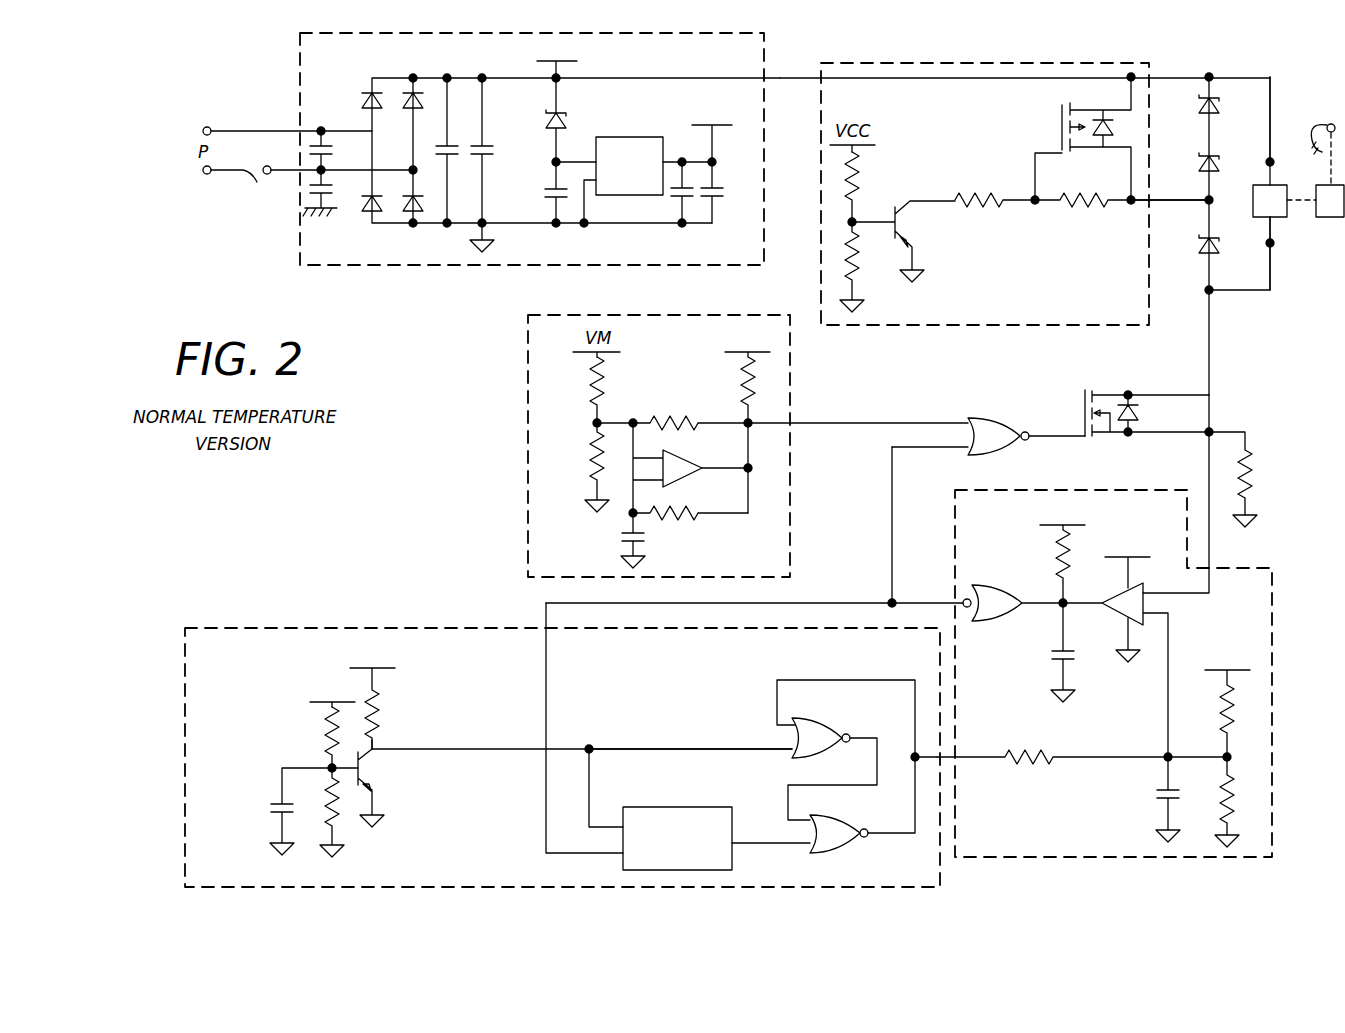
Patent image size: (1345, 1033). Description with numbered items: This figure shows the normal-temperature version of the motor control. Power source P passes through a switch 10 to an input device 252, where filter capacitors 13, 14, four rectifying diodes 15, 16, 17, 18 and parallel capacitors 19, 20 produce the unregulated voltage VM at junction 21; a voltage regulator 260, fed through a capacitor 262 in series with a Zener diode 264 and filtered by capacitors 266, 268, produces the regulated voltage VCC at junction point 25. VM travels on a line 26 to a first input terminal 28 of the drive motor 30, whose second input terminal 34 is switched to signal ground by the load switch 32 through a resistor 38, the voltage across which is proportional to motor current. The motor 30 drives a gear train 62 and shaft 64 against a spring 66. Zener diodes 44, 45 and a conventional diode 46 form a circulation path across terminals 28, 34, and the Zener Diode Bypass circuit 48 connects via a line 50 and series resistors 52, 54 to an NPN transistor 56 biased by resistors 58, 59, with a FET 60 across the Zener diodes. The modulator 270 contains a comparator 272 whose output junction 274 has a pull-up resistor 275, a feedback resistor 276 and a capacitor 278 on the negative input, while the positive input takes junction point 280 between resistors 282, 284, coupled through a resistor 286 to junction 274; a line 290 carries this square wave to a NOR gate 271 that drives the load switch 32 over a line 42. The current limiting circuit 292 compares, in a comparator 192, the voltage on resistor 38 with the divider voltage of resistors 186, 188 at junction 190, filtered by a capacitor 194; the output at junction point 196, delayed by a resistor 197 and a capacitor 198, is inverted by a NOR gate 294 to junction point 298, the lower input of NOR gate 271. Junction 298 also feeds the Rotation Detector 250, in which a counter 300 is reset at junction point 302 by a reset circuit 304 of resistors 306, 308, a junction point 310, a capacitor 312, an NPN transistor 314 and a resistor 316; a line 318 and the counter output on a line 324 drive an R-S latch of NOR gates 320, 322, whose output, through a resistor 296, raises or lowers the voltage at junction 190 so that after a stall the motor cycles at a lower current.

The switch 10 is at (253, 190).
The filter capacitor 13 is at (315, 148).
The filter capacitor 14 is at (306, 200).
The diode 15 is at (366, 90).
The diode 16 is at (412, 108).
The diode 17 is at (370, 196).
The diode 18 is at (413, 196).
The capacitor 19 is at (449, 145).
The capacitor 20 is at (480, 158).
The VM supply node 21 is at (560, 76).
The junction point 25 is at (714, 160).
The line 26 is at (777, 76).
The first input terminal 28 is at (1265, 162).
The drive motor 30 is at (1253, 190).
The load switch 32 is at (1107, 390).
The second input terminal 34 is at (1266, 243).
The resistor 38 is at (1252, 478).
The line 42 is at (1065, 434).
The Zener diode 44 is at (1204, 99).
The Zener diode 45 is at (1204, 158).
The conventional diode 46 is at (1203, 240).
The Zener Diode Bypass circuit 48 is at (1112, 63).
The line 50 is at (1190, 198).
The resistor 52 is at (1092, 208).
The resistor 54 is at (980, 208).
The NPN transistor 56 is at (912, 222).
The resistor 58 is at (860, 185).
The resistor 59 is at (860, 255).
The FET 60 is at (1058, 125).
The gear train 62 is at (1338, 218).
The shaft 64 is at (1321, 154).
The spring 66 is at (1331, 122).
The resistor 186 is at (1222, 712).
The resistor 188 is at (1222, 792).
The junction point 190 is at (1166, 752).
The comparator 192 is at (1118, 600).
The capacitor 194 is at (1162, 802).
The junction point 196 is at (1060, 606).
The resistor 197 is at (1058, 578).
The capacitor 198 is at (1068, 660).
The Rotation Detector circuit 250 is at (455, 628).
The input device 252 is at (605, 33).
The voltage regulator box 260 is at (607, 137).
The capacitor 262 is at (553, 190).
The Zener diode 264 is at (553, 115).
The capacitor 266 is at (677, 198).
The capacitor 268 is at (714, 200).
The modulator 270 is at (690, 315).
The NOR gate 271 is at (997, 418).
The comparator 272 is at (685, 482).
The junction 274 is at (746, 463).
The pull-up resistor 275 is at (738, 375).
The feedback resistor 276 is at (692, 520).
The capacitor 278 is at (628, 537).
The junction point 280 is at (602, 420).
The resistor 282 is at (603, 383).
The resistor 284 is at (592, 468).
The resistor 286 is at (696, 420).
The line 290 is at (862, 425).
The current limiting circuit 292 is at (1120, 490).
The NOR gate 294 is at (997, 622).
The resistor 296 is at (1020, 750).
The junction point 298 is at (885, 600).
The counter 300 is at (702, 807).
The junction point 302 is at (592, 745).
The reset circuit 304 is at (290, 684).
The resistor 306 is at (326, 727).
The resistor 308 is at (328, 825).
The junction point 310 is at (328, 764).
The capacitor 312 is at (278, 825).
The NPN transistor 314 is at (372, 768).
The resistor 316 is at (378, 708).
The line 318 is at (720, 747).
The NOR gate 320 is at (825, 718).
The NOR gate 322 is at (838, 815).
The line 324 is at (782, 840).